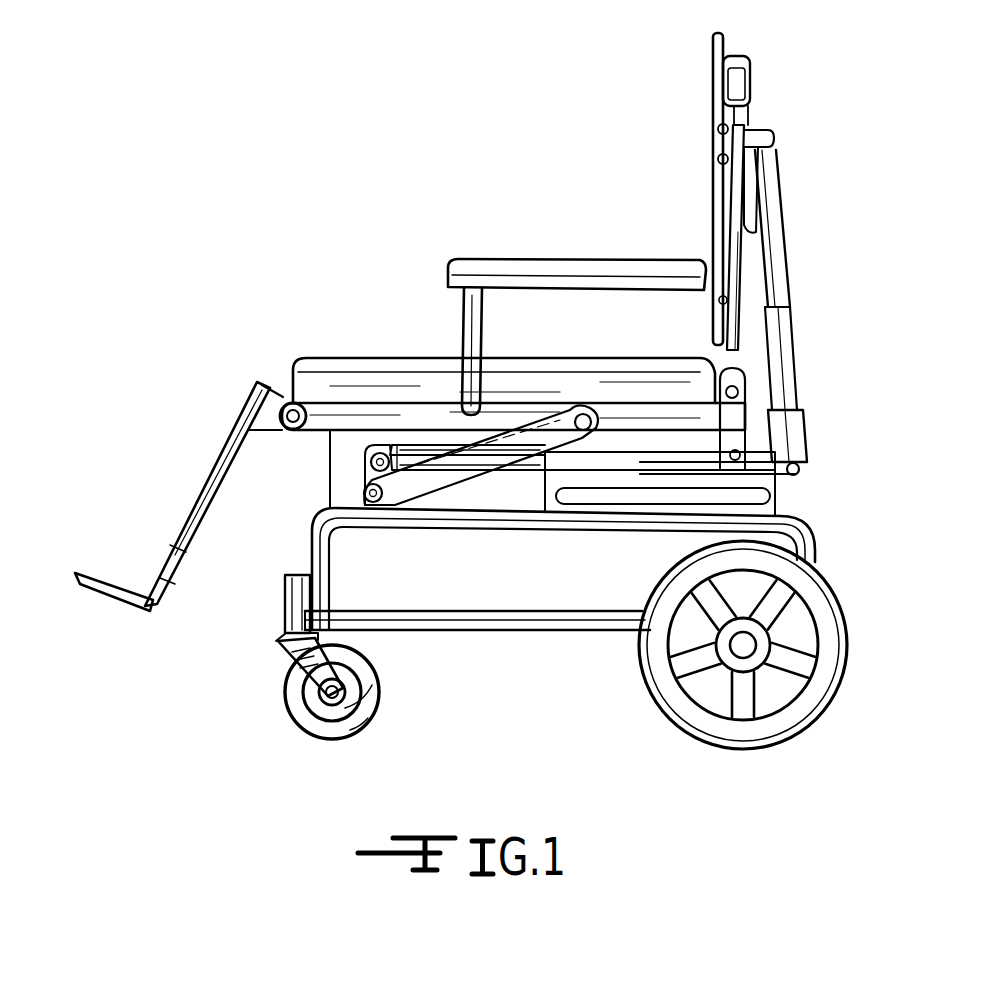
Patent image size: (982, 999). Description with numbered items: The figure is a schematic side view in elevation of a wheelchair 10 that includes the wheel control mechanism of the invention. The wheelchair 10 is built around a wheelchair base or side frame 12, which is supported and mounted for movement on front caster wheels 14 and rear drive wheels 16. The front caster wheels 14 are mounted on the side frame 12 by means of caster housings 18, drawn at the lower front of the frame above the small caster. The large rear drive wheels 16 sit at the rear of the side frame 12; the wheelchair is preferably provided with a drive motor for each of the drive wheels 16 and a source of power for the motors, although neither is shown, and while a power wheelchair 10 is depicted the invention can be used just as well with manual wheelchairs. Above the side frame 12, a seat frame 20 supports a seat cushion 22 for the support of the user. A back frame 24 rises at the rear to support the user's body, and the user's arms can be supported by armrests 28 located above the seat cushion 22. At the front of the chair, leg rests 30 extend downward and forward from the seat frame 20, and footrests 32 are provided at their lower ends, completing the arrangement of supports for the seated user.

The wheelchair 10 is at (318, 155).
The side frame 12 is at (290, 514).
The front caster wheels 14 is at (284, 702).
The rear drive wheels 16 is at (752, 748).
The caster housings 18 is at (285, 592).
The seat frame 20 is at (330, 385).
The seat cushion 22 is at (404, 358).
The back frame 24 is at (720, 158).
The armrests 28 is at (575, 260).
The leg rests 30 is at (205, 478).
The footrests 32 is at (105, 578).